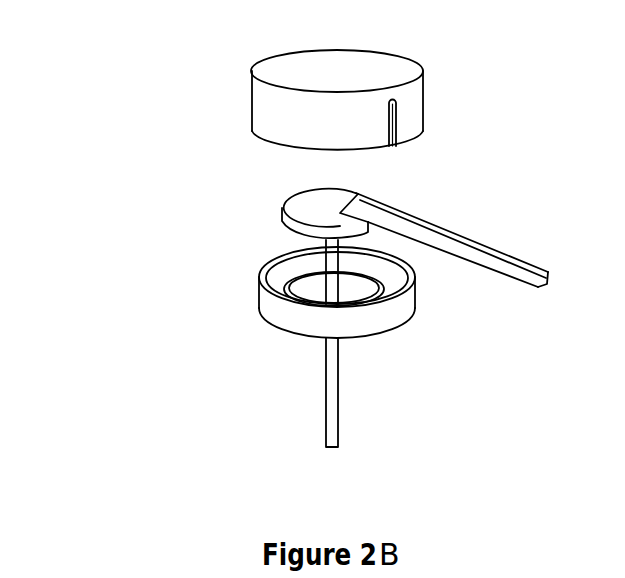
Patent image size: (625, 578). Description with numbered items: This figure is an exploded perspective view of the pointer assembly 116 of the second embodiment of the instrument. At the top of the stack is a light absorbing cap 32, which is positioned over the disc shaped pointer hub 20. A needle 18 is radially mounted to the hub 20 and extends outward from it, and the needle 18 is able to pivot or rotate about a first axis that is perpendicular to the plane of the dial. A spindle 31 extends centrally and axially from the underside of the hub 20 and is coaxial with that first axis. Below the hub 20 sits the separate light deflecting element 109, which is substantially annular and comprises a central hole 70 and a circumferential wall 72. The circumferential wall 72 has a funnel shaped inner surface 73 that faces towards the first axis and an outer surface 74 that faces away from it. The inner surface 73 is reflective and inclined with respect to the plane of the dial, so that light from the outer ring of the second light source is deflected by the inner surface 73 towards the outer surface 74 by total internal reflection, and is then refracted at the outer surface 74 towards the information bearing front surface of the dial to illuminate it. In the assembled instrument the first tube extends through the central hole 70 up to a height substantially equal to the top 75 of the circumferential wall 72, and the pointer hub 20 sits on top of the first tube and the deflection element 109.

The pointer assembly 116 is at (135, 113).
The light absorbing cap 32 is at (355, 62).
The pointer hub 20 is at (295, 205).
The needle 18 is at (447, 243).
The spindle 31 is at (332, 403).
The light deflecting element 109 is at (248, 288).
The central hole 70 is at (391, 301).
The top of the circumferential wall 75 is at (404, 272).
The inner surface 73 is at (272, 262).
The circumferential wall 72 is at (268, 303).
The outer surface 74 is at (307, 322).